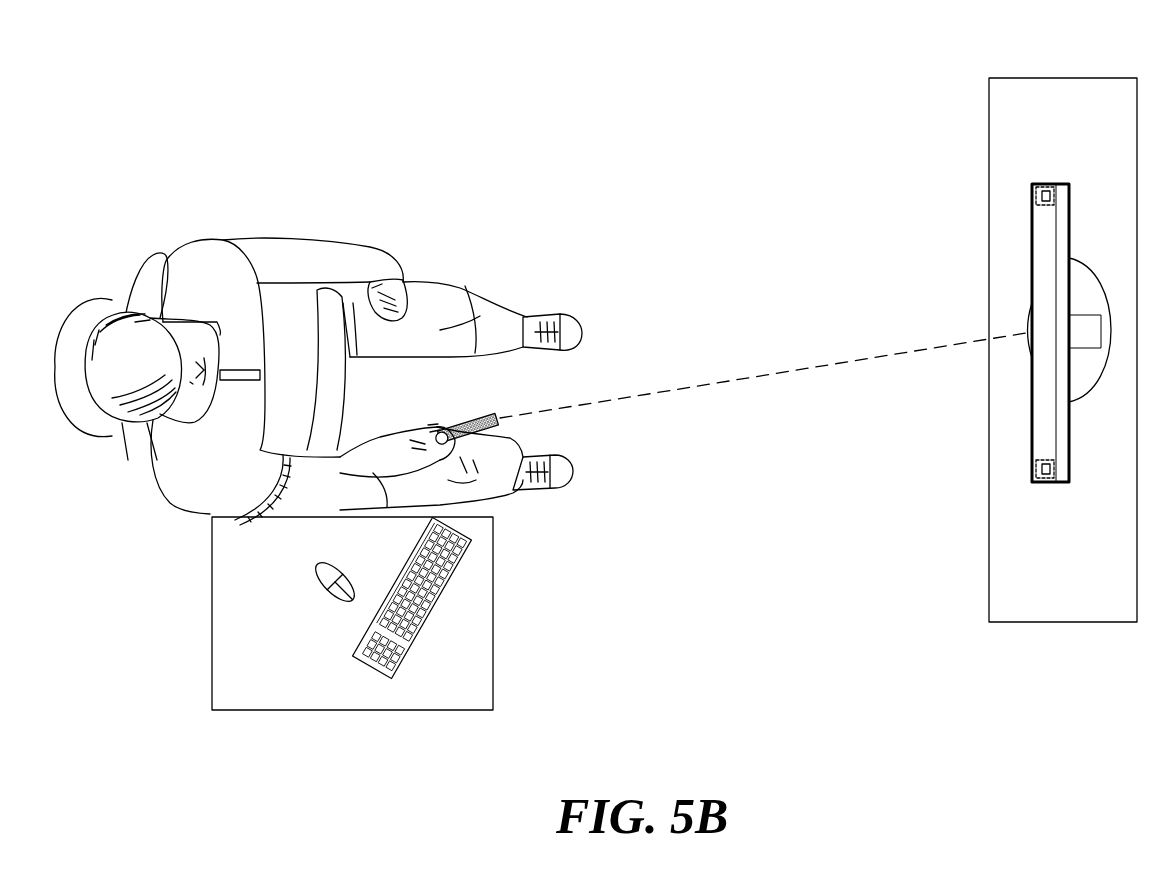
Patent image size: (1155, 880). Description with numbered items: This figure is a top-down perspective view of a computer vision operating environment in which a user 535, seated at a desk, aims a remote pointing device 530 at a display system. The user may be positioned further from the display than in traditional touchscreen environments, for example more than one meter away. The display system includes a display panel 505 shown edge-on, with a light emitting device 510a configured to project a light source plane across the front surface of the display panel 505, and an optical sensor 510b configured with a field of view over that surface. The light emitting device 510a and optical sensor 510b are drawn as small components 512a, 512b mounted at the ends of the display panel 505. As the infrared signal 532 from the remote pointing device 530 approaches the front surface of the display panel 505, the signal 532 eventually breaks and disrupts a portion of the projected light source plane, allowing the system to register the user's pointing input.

The display panel 505 is at (1060, 184).
The light emitting device 510a is at (1036, 468).
The optical sensor 510b is at (1036, 196).
The sensor element 512a is at (1054, 470).
The sensor element 512b is at (1054, 196).
The remote pointing device 530 is at (471, 422).
The infrared signal 532 is at (786, 371).
The user 535 is at (210, 240).